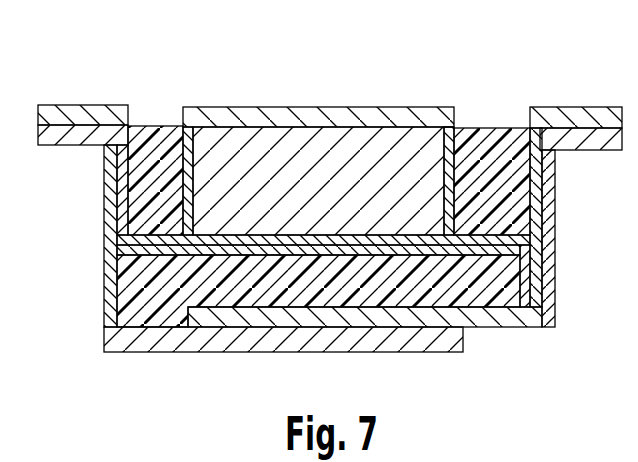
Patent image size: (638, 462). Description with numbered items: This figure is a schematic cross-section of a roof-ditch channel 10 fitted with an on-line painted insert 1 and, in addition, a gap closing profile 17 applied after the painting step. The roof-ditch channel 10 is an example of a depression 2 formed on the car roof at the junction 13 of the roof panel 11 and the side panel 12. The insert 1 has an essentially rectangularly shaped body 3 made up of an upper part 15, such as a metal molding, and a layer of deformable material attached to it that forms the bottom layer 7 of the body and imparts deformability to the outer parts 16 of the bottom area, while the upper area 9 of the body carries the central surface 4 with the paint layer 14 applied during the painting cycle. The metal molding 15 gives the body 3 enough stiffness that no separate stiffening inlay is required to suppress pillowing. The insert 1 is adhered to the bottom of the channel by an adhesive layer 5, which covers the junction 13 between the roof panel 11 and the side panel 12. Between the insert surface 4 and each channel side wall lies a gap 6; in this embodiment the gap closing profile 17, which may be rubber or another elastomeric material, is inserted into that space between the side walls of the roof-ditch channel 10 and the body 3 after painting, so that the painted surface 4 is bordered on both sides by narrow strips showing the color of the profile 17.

The on-line painted insert 1 is at (325, 203).
The depression 2 is at (146, 110).
The shaped body 3 is at (415, 118).
The surface 4 is at (237, 116).
The adhesive layer 5 is at (375, 290).
The gap 6 is at (166, 118).
The bottom layer 7 is at (288, 255).
The upper area 9 is at (287, 150).
The roof-ditch channel 10 is at (397, 353).
The roof panel 11 is at (112, 212).
The side panel 12 is at (548, 230).
The junction 13 is at (188, 308).
The paint layer 14 is at (440, 120).
The upper part 15 is at (343, 148).
The outer parts 16 is at (145, 251).
The gap closing profile 17 is at (157, 172).